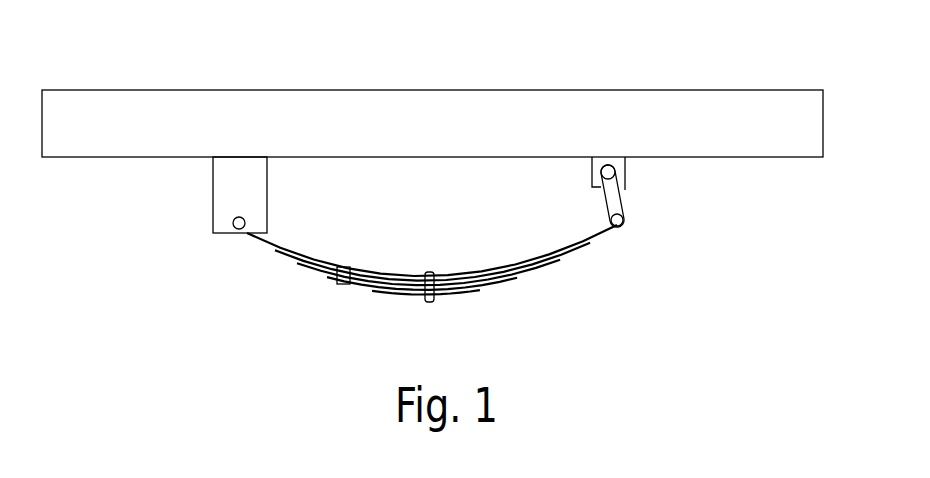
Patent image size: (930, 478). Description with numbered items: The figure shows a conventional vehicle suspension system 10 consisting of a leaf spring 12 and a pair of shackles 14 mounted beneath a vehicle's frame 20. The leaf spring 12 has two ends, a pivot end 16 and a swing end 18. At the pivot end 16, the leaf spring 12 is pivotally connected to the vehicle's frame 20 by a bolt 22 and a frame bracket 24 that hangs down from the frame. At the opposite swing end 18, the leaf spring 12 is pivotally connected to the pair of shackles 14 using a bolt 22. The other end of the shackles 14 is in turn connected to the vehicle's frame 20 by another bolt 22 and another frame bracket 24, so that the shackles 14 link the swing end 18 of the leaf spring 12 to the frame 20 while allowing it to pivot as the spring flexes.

The suspension system 10 is at (698, 63).
The leaf spring 12 is at (453, 298).
The shackles 14 is at (613, 197).
The pivot end 16 is at (270, 247).
The swing end 18 is at (587, 250).
The vehicle's frame 20 is at (233, 122).
The bolt 22 is at (233, 224).
The frame bracket 24 is at (235, 171).